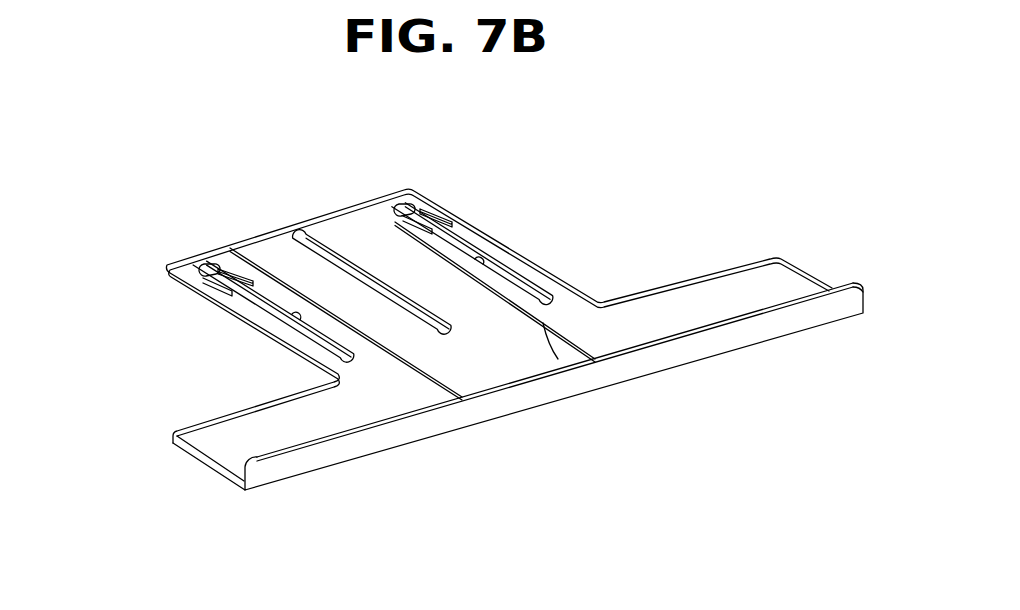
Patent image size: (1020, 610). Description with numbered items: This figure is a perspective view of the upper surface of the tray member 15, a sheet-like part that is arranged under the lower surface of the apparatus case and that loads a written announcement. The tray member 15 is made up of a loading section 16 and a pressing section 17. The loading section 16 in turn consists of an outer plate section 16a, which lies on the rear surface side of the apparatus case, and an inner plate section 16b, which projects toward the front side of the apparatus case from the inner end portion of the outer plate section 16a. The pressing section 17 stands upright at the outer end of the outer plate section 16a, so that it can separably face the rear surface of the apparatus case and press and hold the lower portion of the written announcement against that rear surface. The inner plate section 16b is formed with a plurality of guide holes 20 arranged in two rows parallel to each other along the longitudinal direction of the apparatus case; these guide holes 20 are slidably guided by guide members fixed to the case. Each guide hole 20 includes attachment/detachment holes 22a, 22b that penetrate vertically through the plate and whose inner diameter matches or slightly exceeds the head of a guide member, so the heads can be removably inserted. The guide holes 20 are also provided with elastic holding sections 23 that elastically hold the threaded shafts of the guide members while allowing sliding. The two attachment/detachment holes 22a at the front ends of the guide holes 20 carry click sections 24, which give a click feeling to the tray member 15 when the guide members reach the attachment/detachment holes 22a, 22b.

The tray member 15 is at (489, 314).
The loading section 16 is at (518, 285).
The outer plate section 16a is at (554, 386).
The inner plate section 16b is at (300, 265).
The pressing section 17 is at (628, 370).
The guide holes 20 is at (538, 290).
The attachment/detachment holes 22a is at (213, 266).
The attachment/detachment hole 22b is at (493, 257).
The elastic holding sections 23 is at (243, 272).
The click sections 24 is at (212, 264).